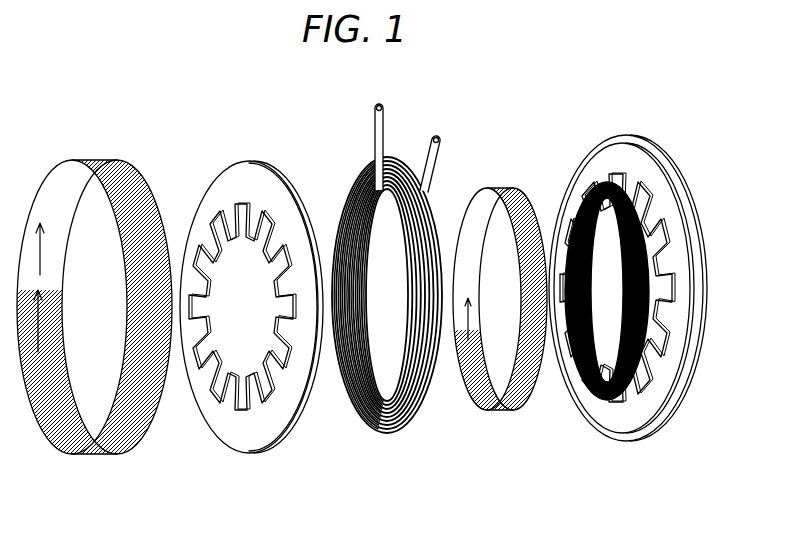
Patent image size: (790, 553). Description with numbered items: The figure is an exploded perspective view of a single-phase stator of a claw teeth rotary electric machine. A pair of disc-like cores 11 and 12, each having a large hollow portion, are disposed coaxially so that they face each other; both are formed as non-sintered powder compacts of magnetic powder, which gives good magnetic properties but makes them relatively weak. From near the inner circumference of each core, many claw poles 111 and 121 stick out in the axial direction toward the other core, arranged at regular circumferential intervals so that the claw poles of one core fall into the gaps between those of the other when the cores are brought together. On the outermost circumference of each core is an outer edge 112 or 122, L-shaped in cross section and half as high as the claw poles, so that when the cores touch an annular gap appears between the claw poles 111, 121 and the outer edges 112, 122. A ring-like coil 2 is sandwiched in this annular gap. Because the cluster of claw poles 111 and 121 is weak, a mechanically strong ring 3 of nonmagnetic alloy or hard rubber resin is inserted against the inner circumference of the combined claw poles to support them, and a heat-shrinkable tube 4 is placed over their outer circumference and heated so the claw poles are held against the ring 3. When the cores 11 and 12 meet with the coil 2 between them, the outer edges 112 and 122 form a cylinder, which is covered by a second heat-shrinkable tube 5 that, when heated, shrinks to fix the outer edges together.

The ring-like coil 2 is at (385, 435).
The ring 3 is at (650, 208).
The heat-shrinkable tube 4 is at (501, 188).
The heat-shrinkable tube 5 is at (96, 160).
The disc-like core 11 is at (251, 307).
The disc-like core 12 is at (641, 276).
The claw poles 111 is at (224, 338).
The outer edge 112 is at (246, 162).
The claw poles 121 is at (668, 260).
The outer edge 122 is at (616, 136).